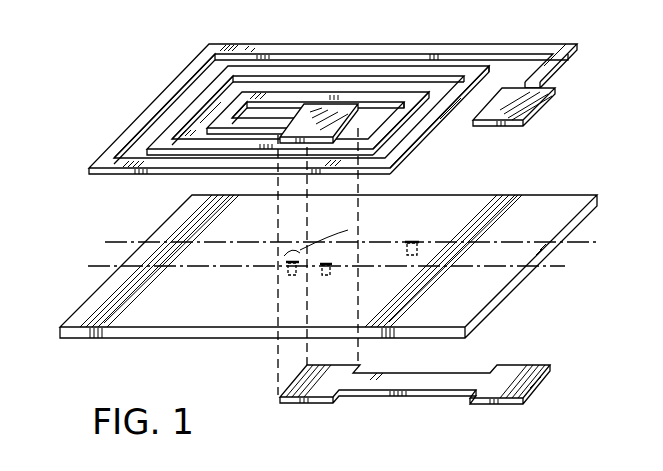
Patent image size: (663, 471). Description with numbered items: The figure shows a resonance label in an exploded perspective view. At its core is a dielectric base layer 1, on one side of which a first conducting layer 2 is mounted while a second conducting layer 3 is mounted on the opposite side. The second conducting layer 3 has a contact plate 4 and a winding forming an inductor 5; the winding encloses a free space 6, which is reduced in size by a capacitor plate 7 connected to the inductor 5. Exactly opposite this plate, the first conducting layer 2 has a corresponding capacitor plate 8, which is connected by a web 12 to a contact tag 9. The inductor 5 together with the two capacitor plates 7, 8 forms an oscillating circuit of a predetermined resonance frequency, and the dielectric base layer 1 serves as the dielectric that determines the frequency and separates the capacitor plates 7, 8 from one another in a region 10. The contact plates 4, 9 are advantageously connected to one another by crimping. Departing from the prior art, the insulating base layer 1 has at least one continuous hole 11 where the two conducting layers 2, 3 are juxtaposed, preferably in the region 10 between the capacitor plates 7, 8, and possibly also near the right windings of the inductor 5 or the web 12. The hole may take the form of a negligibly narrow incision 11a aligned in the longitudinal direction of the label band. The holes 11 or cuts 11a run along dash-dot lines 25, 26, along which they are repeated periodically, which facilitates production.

The dielectric base layer 1 is at (80, 336).
The first conducting layer 2 is at (414, 404).
The second conducting layer 3 is at (313, 88).
The contact plate 4 is at (532, 121).
The inductor 5 is at (306, 43).
The free space 6 is at (382, 116).
The capacitor plate 7 is at (328, 106).
The capacitor plate 8 is at (300, 403).
The contact tag 9 is at (490, 404).
The region 10 is at (283, 262).
The continuous hole 11 is at (303, 250).
The incision 11a is at (405, 235).
The web 12 is at (350, 397).
The dash-dot line 25 is at (565, 270).
The dash-dot line 26 is at (598, 240).